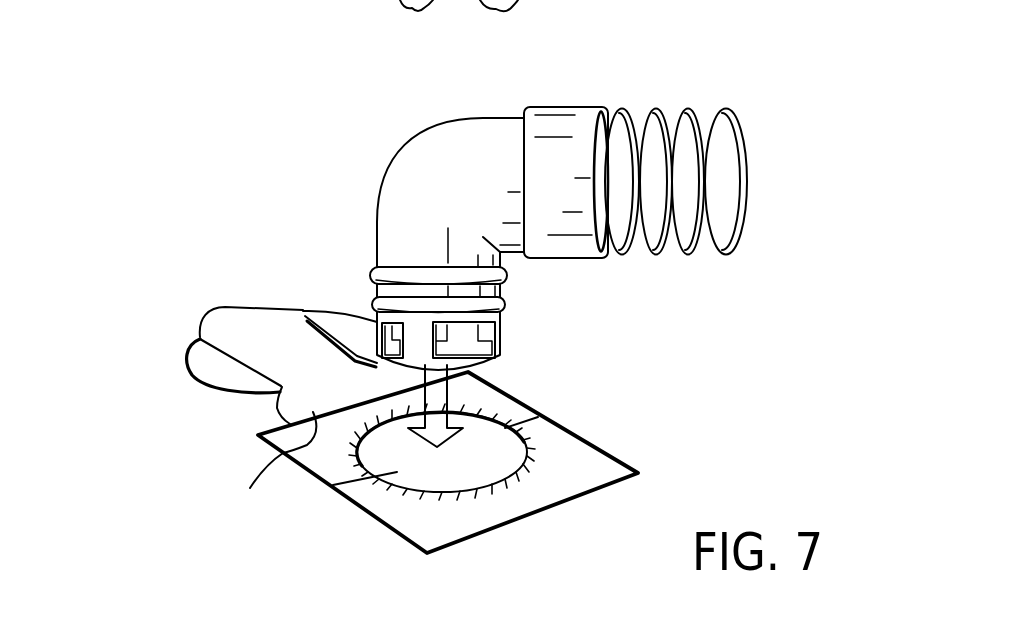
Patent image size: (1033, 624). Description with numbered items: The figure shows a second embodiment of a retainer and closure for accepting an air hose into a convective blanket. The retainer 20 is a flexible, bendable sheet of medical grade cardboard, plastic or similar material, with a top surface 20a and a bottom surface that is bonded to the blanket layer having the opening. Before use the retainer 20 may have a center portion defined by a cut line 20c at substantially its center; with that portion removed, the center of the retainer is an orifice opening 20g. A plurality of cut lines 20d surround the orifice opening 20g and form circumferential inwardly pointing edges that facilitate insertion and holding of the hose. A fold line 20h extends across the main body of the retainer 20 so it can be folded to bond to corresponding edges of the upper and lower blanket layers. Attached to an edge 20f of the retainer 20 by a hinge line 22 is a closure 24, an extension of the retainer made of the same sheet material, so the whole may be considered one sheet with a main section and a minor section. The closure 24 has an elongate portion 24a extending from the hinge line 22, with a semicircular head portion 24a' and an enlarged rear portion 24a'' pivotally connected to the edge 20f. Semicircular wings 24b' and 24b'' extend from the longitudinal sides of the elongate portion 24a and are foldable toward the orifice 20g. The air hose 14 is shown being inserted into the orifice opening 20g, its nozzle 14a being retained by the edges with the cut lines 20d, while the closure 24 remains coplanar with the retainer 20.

The air hose 14 is at (525, 185).
The nozzle 14a is at (373, 242).
The retainer 20 is at (441, 477).
The top surface 20a is at (598, 482).
The cut line 20c is at (383, 495).
The cut lines 20d is at (478, 493).
The edge 20f is at (262, 430).
The orifice opening 20g is at (411, 482).
The fold line 20h is at (520, 427).
The hinge line 22 is at (270, 467).
The closure 24 is at (217, 313).
The elongate portion 24a is at (288, 337).
The semicircular head portion 24a' is at (196, 257).
The enlarged rear portion 24a'' is at (193, 414).
The semicircular wing 24b' is at (169, 354).
The semicircular wing 24b'' is at (295, 264).